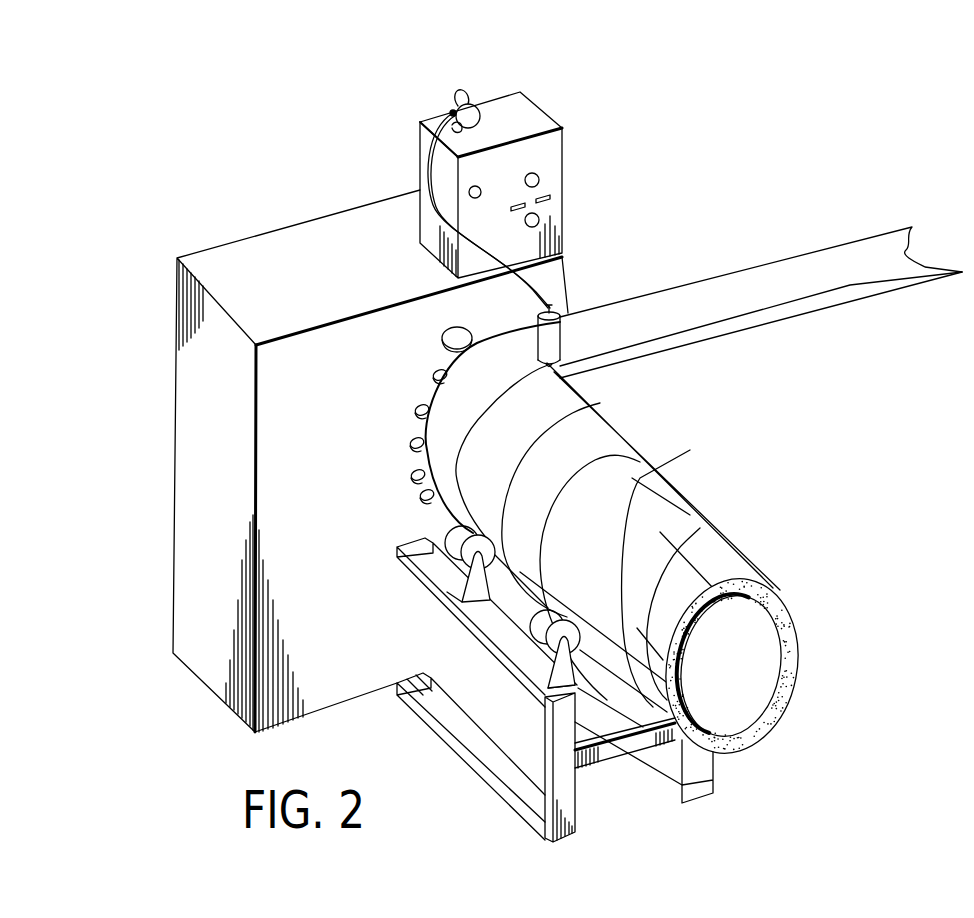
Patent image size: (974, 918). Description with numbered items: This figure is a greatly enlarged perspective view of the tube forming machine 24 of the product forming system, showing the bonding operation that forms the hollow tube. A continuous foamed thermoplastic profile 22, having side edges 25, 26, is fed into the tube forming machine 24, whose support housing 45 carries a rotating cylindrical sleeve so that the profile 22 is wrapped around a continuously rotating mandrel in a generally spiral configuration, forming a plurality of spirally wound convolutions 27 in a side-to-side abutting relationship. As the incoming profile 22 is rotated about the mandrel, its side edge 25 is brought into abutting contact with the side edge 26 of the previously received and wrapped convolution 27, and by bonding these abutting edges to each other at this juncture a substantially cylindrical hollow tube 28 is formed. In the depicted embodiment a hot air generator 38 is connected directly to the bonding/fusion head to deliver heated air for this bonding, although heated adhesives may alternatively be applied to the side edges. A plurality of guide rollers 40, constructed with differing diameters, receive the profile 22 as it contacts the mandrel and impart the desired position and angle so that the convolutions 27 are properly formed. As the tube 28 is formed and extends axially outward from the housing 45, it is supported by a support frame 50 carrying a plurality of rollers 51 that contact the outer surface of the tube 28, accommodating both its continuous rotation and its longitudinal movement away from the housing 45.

The foamed thermoplastic profile 22 is at (829, 271).
The tube forming machine 24 is at (266, 262).
The side edge 25 is at (826, 312).
The side edge 26 is at (673, 312).
The spirally wound convolutions 27 is at (583, 446).
The hollow tube 28 is at (709, 564).
The hot air generator 38 is at (514, 136).
The guide rollers 40 is at (410, 433).
The support housing 45 is at (226, 576).
The support frame 50 is at (555, 781).
The rollers 51 is at (537, 620).